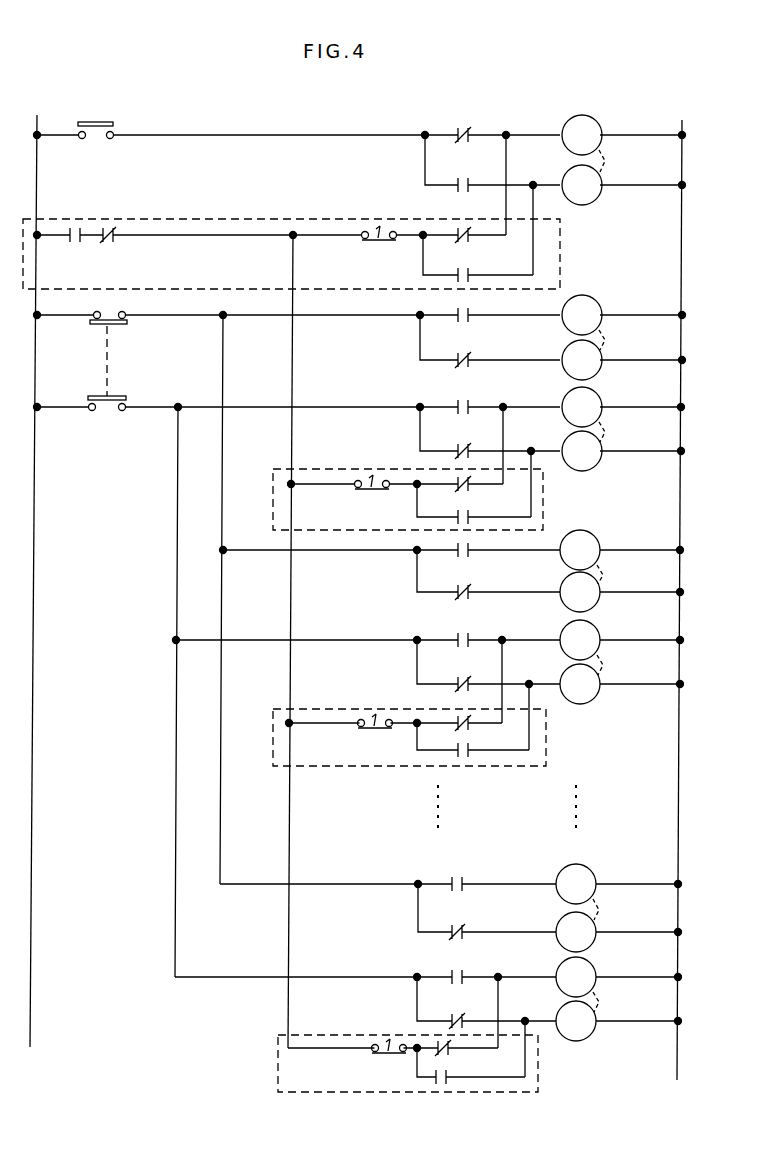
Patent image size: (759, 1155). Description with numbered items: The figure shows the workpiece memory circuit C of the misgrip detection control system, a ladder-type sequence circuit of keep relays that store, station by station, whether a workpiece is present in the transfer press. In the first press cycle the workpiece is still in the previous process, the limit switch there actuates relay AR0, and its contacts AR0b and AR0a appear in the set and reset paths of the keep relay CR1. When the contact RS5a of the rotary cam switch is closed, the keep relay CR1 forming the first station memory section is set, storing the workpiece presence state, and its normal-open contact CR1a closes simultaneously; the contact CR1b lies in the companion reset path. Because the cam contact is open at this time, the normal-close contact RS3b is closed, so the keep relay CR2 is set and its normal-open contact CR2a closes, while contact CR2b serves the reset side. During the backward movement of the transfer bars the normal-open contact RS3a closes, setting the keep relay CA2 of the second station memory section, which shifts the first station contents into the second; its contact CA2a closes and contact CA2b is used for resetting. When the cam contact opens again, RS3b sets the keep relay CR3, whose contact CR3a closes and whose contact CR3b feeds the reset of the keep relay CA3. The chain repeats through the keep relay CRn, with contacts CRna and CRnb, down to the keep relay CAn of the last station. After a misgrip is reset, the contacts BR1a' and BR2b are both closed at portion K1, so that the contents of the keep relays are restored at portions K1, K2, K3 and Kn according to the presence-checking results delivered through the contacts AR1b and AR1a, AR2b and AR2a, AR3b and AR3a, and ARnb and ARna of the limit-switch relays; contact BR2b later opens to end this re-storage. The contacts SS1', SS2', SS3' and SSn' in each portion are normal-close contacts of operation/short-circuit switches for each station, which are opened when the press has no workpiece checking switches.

The workpiece memory circuit C is at (709, 282).
The normal-open contact of contact RS5 of rotary cam switch RS5a is at (100, 122).
The contact of relay AR0 AR0b is at (462, 127).
The contact of relay AR0 AR0a is at (458, 178).
The keep relay CR1 is at (591, 117).
The portion K1 is at (562, 249).
The contact of relay BR1 BR1a' is at (86, 210).
The contact of relay BR2 BR2b is at (113, 243).
The normal-close contact of operation/short-circuit switch SS1' is at (382, 210).
The contact of relay AR1 AR1b is at (452, 232).
The contact of relay AR1 AR1a is at (470, 272).
The normal-close contact of contact RS3 of rotary cam switch RS3b is at (110, 310).
The normal-open contact of contact RS3 of rotary cam switch RS3a is at (115, 396).
The normal-open contact of keep relay CR1 CR1a is at (470, 312).
The contact of keep relay CR1 CR1b is at (470, 356).
The keep relay CR2 is at (591, 311).
The normal-open contact of keep relay CR2 CR2a is at (478, 396).
The keep relay CA2 is at (565, 396).
The contact of keep relay CR2 CR2b is at (460, 448).
The portion K2 is at (546, 495).
The normal-close contact of operation/short-circuit switch SS2' is at (370, 461).
The contact of relay AR2 AR2b is at (452, 481).
The contact of relay AR2 AR2a is at (468, 517).
The keep relay CR3 is at (594, 546).
The normal-open contact of keep relay CA2 CA2a is at (469, 559).
The contact of keep relay CA2 CA2b is at (455, 588).
The normal-open contact of keep relay CR3 CR3a is at (458, 638).
The keep relay CA3 is at (589, 659).
The contact of keep relay CR3 CR3b is at (458, 681).
The portion K3 is at (548, 739).
The normal-close contact of operation/short-circuit switch SS3' is at (370, 701).
The contact of relay AR3 AR3b is at (452, 721).
The contact of relay AR3 AR3a is at (466, 756).
The keep relay CRn is at (592, 874).
The normal-open contact of keep relay CRn CRna is at (454, 971).
The keep relay CAn is at (558, 968).
The contact of keep relay CRn CRnb is at (452, 1016).
The portion Kn is at (540, 1068).
The normal-close contact of operation/short-circuit switch SSn' is at (386, 1026).
The contact of relay ARn ARnb is at (438, 1053).
The contact of relay ARn ARna is at (447, 1084).